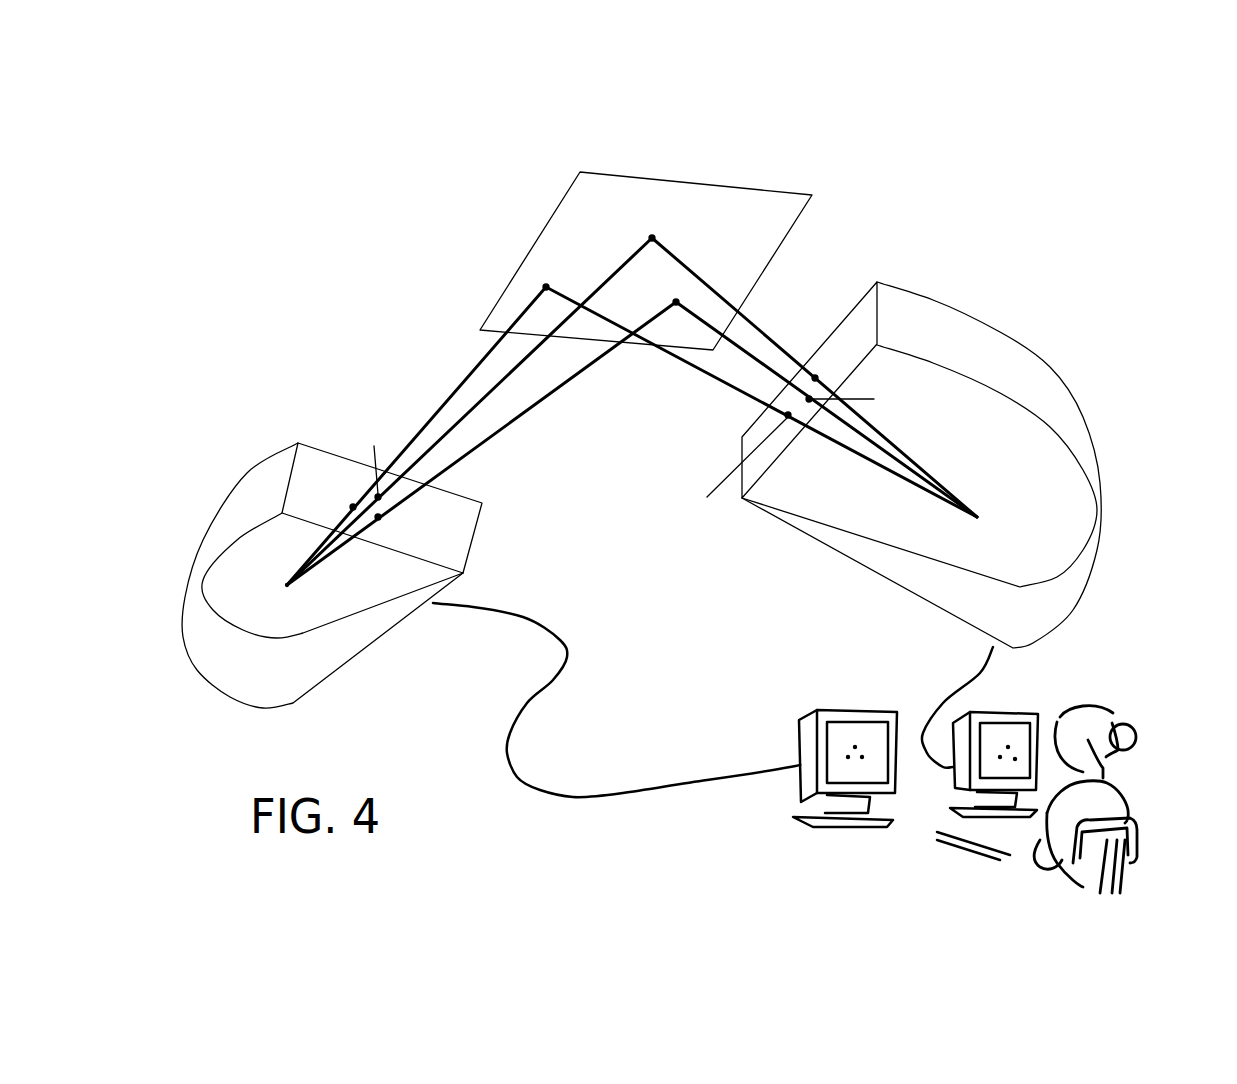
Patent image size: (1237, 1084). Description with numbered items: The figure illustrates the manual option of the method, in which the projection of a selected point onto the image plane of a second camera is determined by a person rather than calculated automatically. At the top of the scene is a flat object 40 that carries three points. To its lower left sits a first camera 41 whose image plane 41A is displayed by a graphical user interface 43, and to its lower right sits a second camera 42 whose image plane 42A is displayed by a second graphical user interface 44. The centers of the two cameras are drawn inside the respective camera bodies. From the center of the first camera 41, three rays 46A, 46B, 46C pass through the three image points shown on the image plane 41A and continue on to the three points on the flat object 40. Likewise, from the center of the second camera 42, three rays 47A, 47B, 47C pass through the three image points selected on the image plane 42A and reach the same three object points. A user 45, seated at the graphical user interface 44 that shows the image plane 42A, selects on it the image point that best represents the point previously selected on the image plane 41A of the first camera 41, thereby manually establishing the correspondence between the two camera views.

The flat object 40 is at (738, 183).
The first camera 41 is at (232, 495).
The image plane of the first camera 41A is at (317, 458).
The second camera 42 is at (993, 350).
The image plane of the second camera 42A is at (862, 327).
The graphical user interface 43 is at (838, 707).
The graphical user interface 44 is at (1003, 710).
The user 45 is at (1110, 802).
The ray 46A is at (427, 423).
The ray 46B is at (475, 403).
The ray 46C is at (547, 402).
The ray 47A is at (700, 370).
The ray 47B is at (765, 368).
The ray 47C is at (762, 330).